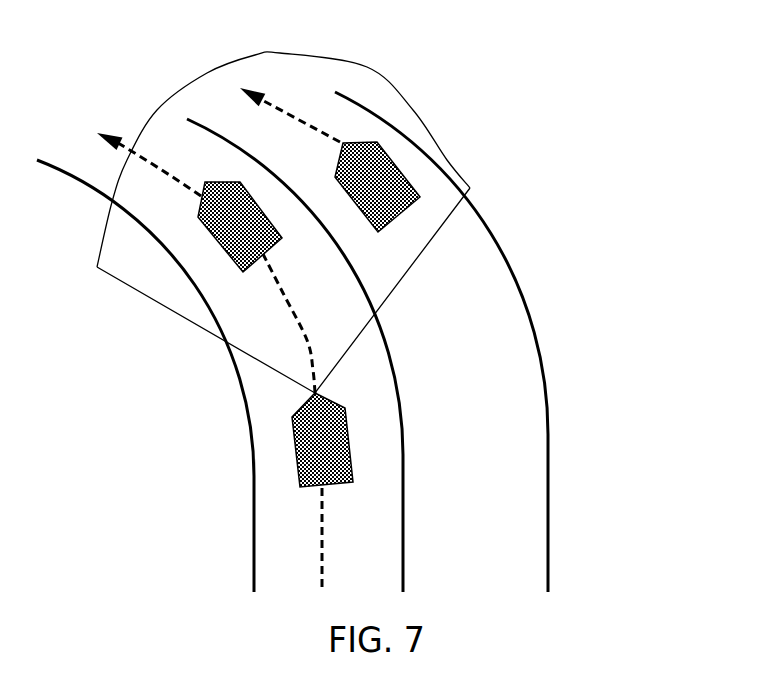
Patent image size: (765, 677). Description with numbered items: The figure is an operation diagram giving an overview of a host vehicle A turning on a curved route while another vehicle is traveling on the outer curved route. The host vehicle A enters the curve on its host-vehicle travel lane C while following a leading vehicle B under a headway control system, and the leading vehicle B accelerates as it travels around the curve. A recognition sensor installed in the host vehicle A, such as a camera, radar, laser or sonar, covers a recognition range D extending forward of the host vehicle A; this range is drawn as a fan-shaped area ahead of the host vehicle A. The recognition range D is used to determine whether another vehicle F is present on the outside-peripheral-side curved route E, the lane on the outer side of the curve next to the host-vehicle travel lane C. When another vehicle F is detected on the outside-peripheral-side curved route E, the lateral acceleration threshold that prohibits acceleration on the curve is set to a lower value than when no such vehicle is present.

The host vehicle A is at (355, 420).
The leading vehicle B is at (268, 212).
The host-vehicle travel lane C is at (288, 505).
The recognition range D is at (182, 318).
The outside-peripheral-side curved route E is at (475, 495).
The another vehicle F is at (397, 155).